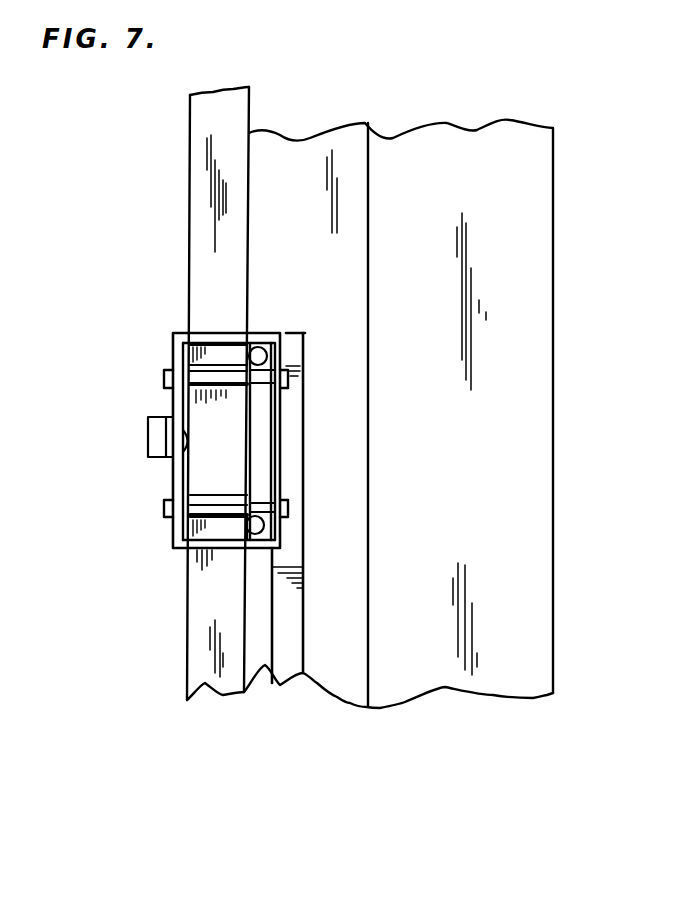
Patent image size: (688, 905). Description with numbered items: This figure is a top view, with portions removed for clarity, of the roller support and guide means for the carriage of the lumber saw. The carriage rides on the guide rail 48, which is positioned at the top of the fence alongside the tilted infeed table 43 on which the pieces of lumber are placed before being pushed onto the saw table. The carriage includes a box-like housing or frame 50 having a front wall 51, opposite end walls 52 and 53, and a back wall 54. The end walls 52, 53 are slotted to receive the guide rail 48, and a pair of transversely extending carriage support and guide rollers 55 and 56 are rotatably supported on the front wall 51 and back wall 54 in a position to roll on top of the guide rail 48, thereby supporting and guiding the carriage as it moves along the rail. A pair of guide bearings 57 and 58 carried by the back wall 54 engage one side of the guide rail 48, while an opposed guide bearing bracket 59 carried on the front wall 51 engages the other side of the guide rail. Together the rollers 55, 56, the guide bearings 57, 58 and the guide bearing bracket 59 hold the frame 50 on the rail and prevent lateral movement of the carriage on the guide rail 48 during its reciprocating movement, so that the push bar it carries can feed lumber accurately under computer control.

The tilted infeed table 43 is at (308, 158).
The guide rail 48 is at (208, 290).
The box-like housing or frame 50 is at (150, 470).
The front wall 51 is at (172, 491).
The end wall 52 is at (228, 334).
The end wall 53 is at (215, 551).
The back wall 54 is at (280, 462).
The carriage support and guide roller 55 is at (198, 372).
The carriage support and guide roller 56 is at (183, 528).
The guide bearing 57 is at (262, 354).
The guide bearing 58 is at (262, 532).
The guide bearing bracket 59 is at (155, 432).